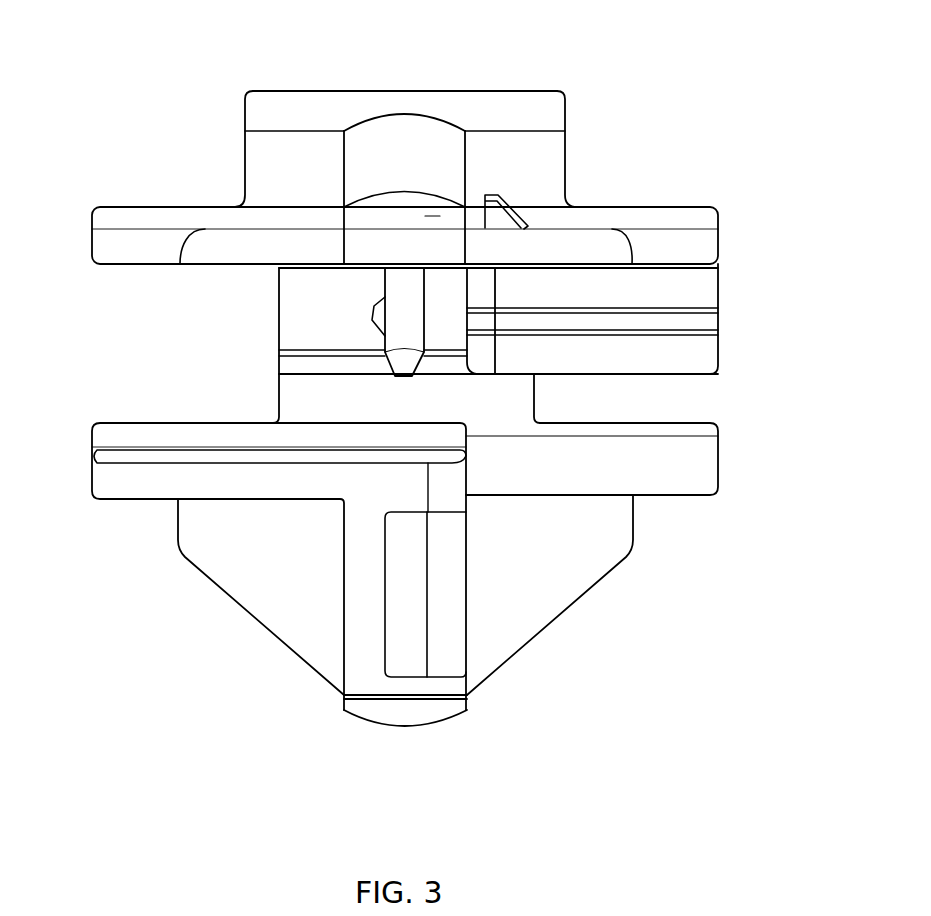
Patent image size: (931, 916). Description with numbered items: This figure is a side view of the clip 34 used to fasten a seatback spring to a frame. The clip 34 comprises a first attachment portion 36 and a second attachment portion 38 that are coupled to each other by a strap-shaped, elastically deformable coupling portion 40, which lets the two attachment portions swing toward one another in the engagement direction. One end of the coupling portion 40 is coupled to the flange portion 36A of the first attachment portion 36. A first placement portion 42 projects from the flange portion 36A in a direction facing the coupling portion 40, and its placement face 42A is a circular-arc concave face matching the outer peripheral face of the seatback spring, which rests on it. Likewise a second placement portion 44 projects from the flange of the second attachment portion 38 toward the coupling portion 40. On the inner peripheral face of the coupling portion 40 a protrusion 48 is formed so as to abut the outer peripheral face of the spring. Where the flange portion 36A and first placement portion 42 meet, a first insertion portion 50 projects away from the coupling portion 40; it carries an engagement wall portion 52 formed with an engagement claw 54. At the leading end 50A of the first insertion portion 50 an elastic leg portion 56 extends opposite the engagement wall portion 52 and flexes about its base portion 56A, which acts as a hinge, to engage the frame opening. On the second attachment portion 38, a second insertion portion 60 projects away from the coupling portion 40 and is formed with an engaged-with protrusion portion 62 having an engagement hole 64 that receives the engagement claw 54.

The clip 34 is at (612, 120).
The first attachment portion 36 is at (212, 152).
The flange portion 36A is at (273, 91).
The second attachment portion 38 is at (645, 572).
The coupling portion 40 is at (245, 355).
The first placement portion 42 is at (680, 200).
The placement face 42A is at (688, 290).
The second placement portion 44 is at (128, 420).
The protrusion 48 is at (297, 348).
The first insertion portion 50 is at (563, 227).
The leading end 50A is at (433, 218).
The engagement wall portion 52 is at (382, 283).
The engagement claw 54 is at (372, 322).
The elastic leg portion 56 is at (403, 113).
The base portion 56A is at (378, 192).
The second insertion portion 60 is at (263, 628).
The engaged-with protrusion portion 62 is at (398, 732).
The engagement hole 64 is at (387, 623).